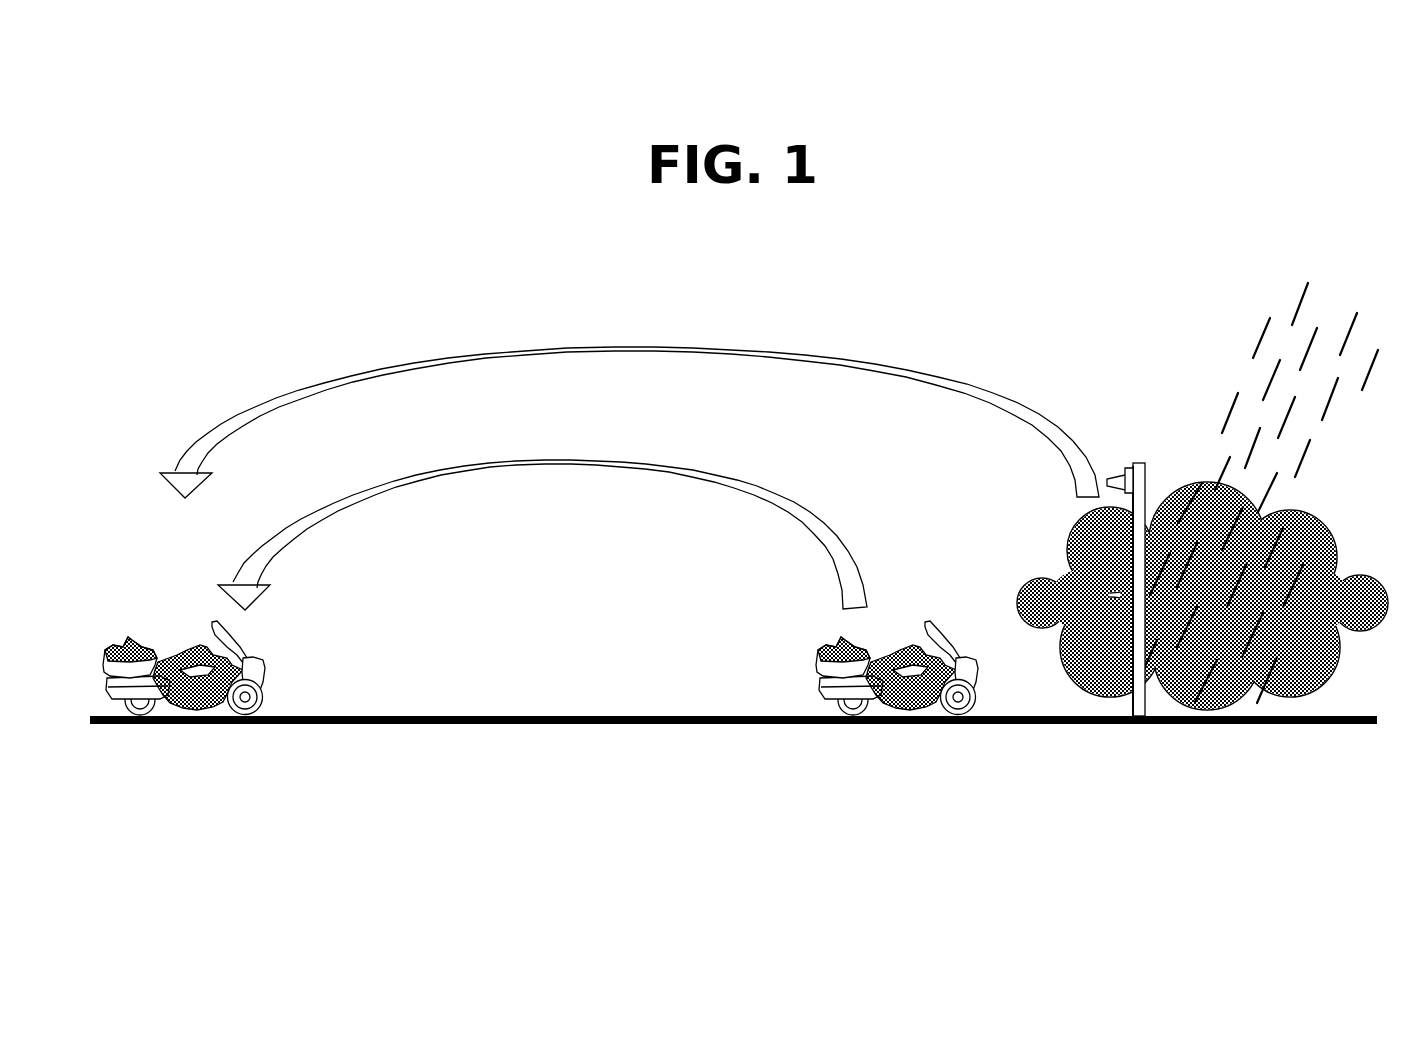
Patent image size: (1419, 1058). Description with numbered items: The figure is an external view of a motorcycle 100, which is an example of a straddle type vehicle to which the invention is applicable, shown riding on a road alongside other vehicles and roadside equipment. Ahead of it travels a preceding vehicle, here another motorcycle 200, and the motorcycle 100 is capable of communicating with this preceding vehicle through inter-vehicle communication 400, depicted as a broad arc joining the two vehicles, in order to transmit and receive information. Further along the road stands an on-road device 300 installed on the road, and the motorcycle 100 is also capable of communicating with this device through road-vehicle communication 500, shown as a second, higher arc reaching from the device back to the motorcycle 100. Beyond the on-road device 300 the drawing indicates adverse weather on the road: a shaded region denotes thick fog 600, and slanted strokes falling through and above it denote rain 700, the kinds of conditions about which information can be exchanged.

The motorcycle 100 is at (268, 664).
The motorcycle 200 is at (934, 610).
The on-road device 300 is at (1148, 461).
The inter-vehicle communication 400 is at (688, 465).
The road-vehicle communication 500 is at (888, 358).
The thick fog 600 is at (1338, 550).
The rain 700 is at (1262, 336).